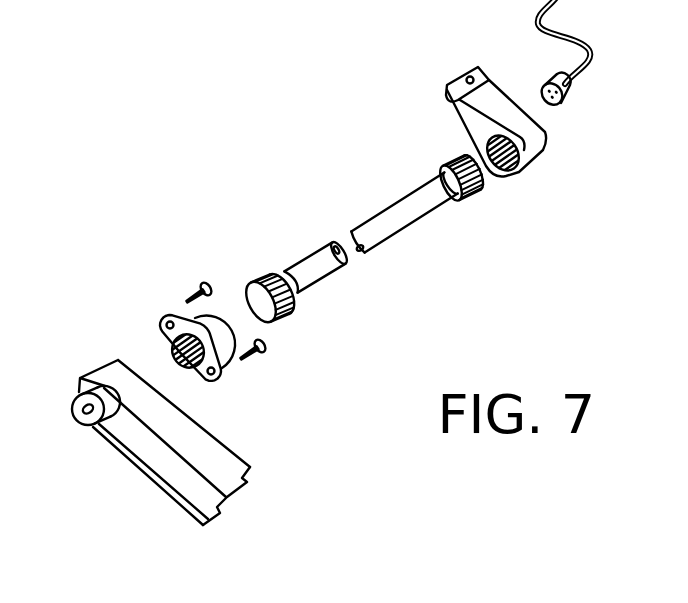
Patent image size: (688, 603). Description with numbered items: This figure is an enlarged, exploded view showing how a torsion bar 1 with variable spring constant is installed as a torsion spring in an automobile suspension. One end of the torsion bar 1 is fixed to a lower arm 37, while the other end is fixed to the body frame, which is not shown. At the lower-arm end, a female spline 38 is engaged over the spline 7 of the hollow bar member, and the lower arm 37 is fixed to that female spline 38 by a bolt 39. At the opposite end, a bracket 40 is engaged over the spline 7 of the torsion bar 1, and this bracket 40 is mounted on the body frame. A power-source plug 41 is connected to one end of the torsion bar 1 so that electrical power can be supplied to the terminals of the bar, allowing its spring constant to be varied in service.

The torsion bar 1 is at (386, 246).
The spline 7 is at (482, 190).
The lower arm 37 is at (210, 450).
The female spline 38 is at (222, 371).
The bolt 39 is at (268, 348).
The bracket 40 is at (530, 142).
The power-source plug 41 is at (566, 96).